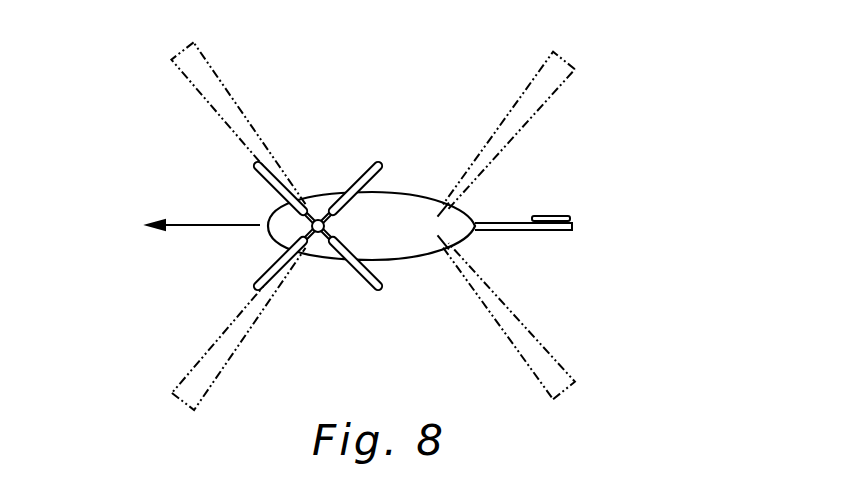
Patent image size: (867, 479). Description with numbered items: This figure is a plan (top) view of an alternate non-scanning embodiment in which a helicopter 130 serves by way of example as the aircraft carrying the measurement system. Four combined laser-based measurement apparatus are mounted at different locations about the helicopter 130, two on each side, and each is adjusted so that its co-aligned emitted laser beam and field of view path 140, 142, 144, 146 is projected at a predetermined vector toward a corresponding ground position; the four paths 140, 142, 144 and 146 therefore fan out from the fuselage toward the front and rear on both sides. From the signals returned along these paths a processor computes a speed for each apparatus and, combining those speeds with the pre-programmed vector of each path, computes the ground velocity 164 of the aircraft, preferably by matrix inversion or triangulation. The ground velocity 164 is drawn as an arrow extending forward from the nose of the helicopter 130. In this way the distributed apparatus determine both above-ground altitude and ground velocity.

The helicopter 130 is at (407, 192).
The co-aligned emitted laser beam and field of view path 140 is at (206, 362).
The co-aligned emitted laser beam and field of view path 142 is at (542, 353).
The co-aligned emitted laser beam and field of view path 144 is at (548, 82).
The co-aligned emitted laser beam and field of view path 146 is at (217, 94).
The ground velocity 164 is at (202, 228).